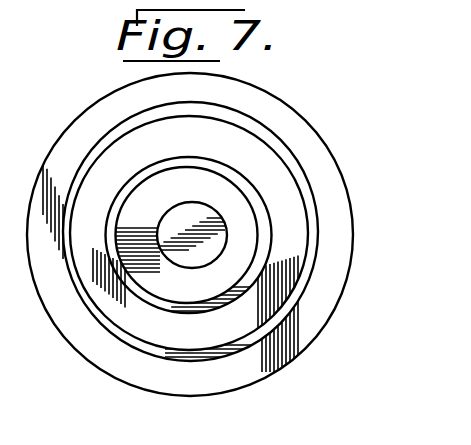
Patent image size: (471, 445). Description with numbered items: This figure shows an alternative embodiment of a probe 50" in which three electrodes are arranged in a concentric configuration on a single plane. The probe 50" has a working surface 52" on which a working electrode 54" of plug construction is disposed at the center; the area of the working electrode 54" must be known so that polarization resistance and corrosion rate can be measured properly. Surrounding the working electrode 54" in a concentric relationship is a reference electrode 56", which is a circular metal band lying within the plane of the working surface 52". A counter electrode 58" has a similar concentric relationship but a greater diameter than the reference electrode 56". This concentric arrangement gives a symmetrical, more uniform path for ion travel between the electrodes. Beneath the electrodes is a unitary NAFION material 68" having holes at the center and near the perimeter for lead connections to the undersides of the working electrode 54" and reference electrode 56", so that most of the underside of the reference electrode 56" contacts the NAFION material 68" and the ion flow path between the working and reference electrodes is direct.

The probe 50 is at (363, 33).
The working surface 52 is at (102, 106).
The working electrode 54 is at (196, 169).
The reference electrode 56 is at (196, 119).
The counter electrode 58 is at (101, 323).
The NAFION material 68 is at (236, 312).